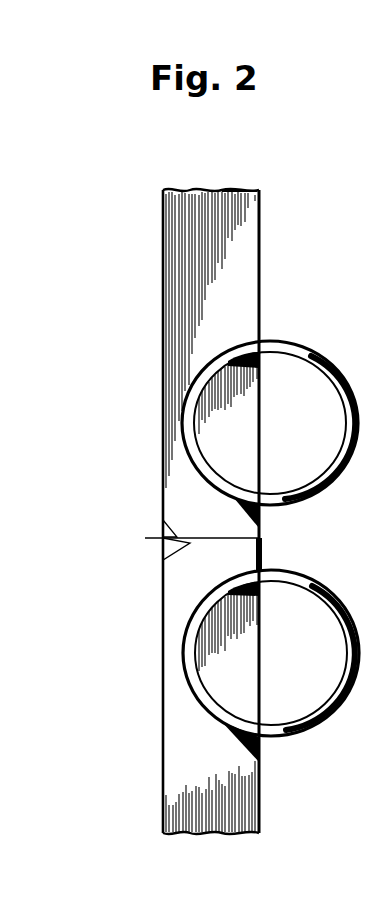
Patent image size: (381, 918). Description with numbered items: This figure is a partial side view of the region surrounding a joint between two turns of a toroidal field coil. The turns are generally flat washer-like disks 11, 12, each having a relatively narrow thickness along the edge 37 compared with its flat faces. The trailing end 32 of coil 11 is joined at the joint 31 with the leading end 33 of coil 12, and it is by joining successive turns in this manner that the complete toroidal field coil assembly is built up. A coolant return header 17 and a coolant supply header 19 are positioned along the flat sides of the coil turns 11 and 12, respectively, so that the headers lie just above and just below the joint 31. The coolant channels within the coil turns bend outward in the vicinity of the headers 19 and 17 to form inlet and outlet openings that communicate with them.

The washer-like disk 11 is at (172, 272).
The washer-like disk 12 is at (185, 772).
The coolant return header 17 is at (287, 343).
The coolant supply header 19 is at (316, 583).
The joint 31 is at (145, 538).
The trailing end 32 is at (177, 537).
The leading end 33 is at (190, 543).
The edge 37 is at (232, 200).